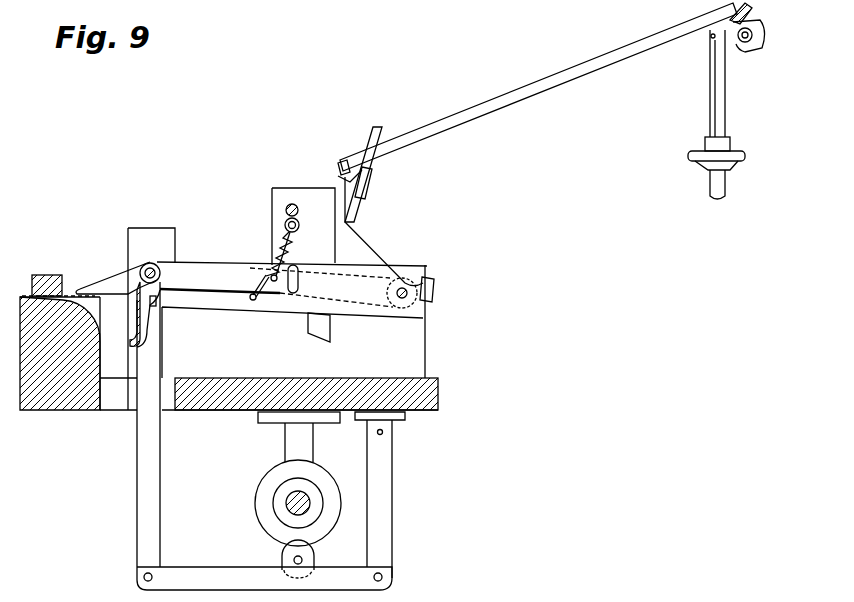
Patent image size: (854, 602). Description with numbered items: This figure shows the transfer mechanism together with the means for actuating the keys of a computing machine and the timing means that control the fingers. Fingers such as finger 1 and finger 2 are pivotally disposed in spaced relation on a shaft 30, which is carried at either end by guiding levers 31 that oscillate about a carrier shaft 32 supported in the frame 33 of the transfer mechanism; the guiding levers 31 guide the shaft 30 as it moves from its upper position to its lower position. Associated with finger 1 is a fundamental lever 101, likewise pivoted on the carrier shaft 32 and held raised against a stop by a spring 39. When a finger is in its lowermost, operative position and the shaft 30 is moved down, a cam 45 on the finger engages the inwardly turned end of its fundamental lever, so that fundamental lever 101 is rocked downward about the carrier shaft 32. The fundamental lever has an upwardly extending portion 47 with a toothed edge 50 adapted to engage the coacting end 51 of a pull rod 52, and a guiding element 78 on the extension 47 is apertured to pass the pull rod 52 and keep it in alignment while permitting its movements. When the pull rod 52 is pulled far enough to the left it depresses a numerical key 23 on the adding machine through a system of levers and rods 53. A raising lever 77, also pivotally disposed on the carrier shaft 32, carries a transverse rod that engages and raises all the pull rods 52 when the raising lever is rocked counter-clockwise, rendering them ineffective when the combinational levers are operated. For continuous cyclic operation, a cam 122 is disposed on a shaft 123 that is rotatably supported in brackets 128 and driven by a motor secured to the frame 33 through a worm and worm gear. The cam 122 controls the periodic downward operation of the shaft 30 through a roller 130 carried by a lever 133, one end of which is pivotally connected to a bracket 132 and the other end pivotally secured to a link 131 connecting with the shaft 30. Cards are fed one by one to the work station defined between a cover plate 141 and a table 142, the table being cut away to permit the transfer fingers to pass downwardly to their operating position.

The finger 1 is at (140, 322).
The finger 2 is at (112, 290).
The numerical key 23 is at (740, 157).
The shaft 30 is at (150, 263).
The guiding lever 31 is at (177, 262).
The carrier shaft 32 is at (400, 300).
The frame 33 is at (425, 350).
The spring 39 is at (264, 272).
The cam 45 is at (156, 305).
The upwardly extending portion 47 is at (374, 186).
The toothed edge 50 is at (340, 183).
The end 51 is at (342, 160).
The pull rod 52 is at (586, 63).
The system of levers and rods 53 is at (742, 50).
The raising lever 77 is at (434, 288).
The guiding element 78 is at (378, 128).
The fundamental lever 101 is at (212, 312).
The cam 122 is at (315, 478).
The shaft 123 is at (292, 502).
The bracket 128 is at (300, 428).
The roller 130 is at (282, 556).
The link 131 is at (140, 480).
The bracket 132 is at (385, 505).
The lever 133 is at (205, 572).
The cover plate 141 is at (58, 265).
The table 142 is at (52, 410).